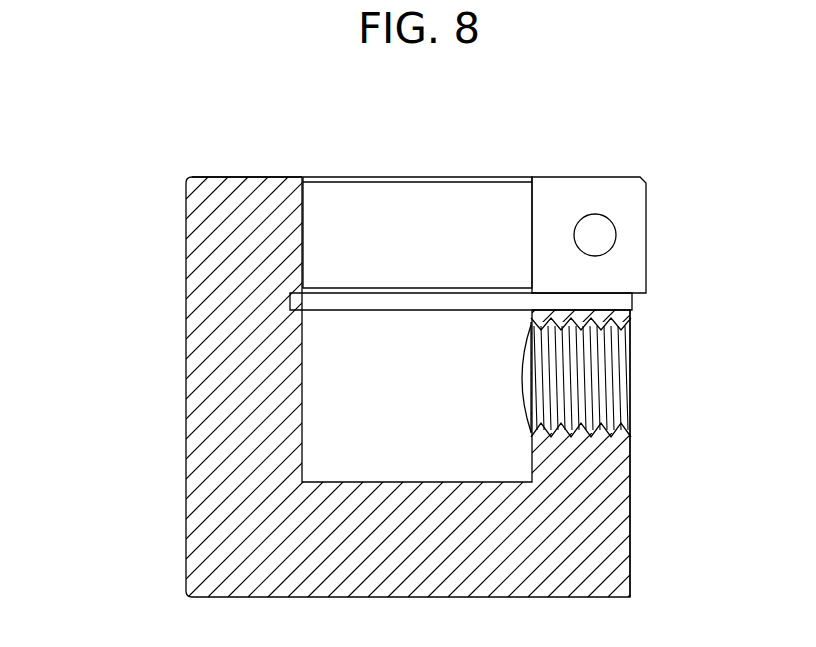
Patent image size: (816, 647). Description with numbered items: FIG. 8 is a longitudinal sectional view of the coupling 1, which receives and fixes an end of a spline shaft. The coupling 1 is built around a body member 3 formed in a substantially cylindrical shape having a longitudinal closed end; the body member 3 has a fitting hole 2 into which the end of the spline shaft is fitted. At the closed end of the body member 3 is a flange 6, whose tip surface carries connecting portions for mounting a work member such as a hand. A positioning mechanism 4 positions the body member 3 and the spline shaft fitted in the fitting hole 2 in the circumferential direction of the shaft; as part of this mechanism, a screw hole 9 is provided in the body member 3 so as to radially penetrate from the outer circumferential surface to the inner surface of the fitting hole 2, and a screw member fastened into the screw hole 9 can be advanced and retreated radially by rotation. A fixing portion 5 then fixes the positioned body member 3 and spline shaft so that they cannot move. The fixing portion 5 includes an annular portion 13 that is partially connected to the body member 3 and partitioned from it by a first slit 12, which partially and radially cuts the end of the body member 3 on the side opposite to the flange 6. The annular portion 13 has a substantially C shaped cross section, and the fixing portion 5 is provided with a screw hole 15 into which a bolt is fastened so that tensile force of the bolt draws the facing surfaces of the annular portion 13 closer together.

The coupling 1 is at (111, 161).
The fitting hole 2 is at (303, 217).
The body member 3 is at (187, 452).
The positioning mechanism 4 is at (238, 177).
The fixing portion 5 is at (617, 235).
The flange 6 is at (630, 482).
The screw hole 9 is at (603, 423).
The first slit 12 is at (632, 293).
The annular portion 13 is at (565, 177).
The screw hole 15 is at (597, 216).